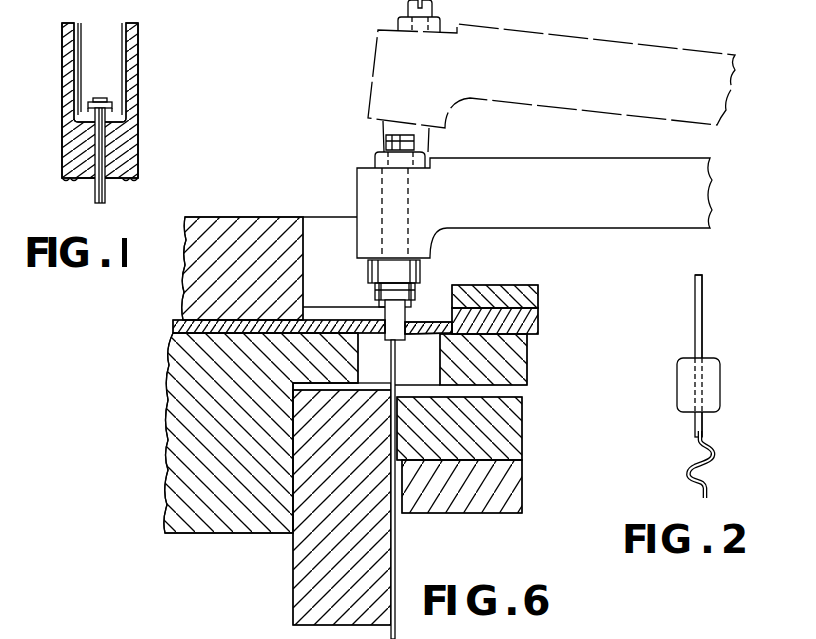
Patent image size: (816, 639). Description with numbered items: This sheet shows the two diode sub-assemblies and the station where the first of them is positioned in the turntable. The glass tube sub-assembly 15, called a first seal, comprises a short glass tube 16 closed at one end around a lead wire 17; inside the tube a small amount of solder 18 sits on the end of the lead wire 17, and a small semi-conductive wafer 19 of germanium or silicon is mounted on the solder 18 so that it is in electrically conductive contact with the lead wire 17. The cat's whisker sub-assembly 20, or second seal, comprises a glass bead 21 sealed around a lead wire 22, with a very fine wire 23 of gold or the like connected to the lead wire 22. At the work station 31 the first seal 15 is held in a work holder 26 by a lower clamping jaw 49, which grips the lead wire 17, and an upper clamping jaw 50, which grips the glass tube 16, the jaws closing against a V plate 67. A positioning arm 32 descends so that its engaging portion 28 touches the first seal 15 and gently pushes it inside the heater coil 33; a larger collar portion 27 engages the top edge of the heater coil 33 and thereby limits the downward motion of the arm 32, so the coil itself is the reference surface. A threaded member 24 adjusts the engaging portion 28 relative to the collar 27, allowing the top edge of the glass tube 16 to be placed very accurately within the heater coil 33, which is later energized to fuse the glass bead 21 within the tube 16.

In FIG. 1, the glass tube sub-assembly 15 is at (192, 39).
In FIG. 6, the glass tube sub-assembly 15 is at (400, 337).
In FIG. 1, the glass tube 16 is at (62, 46).
In FIG. 1, the lead wire 17 is at (95, 192).
In FIG. 6, the lead wire 17 is at (396, 537).
In FIG. 1, the solder 18 is at (110, 112).
In FIG. 1, the semi-conductive wafer 19 is at (92, 100).
In FIG. 2, the cat's whisker sub-assembly 20 is at (752, 357).
In FIG. 2, the glass bead 21 is at (680, 395).
In FIG. 2, the lead wire 22 is at (695, 322).
In FIG. 2, the fine wire 23 is at (720, 459).
In FIG. 6, the threaded member 24 is at (388, 140).
In FIG. 6, the work holder 26 is at (185, 302).
In FIG. 6, the collar portion 27 is at (375, 272).
In FIG. 6, the engaging portion 28 is at (376, 288).
In FIG. 6, the work station 31 is at (279, 174).
In FIG. 6, the positioning arm 32 is at (586, 218).
In FIG. 6, the heater coil 33 is at (415, 283).
In FIG. 6, the lower clamping jaw 49 is at (518, 435).
In FIG. 6, the upper clamping jaw 50 is at (369, 455).
In FIG. 6, the V plate 67 is at (185, 334).